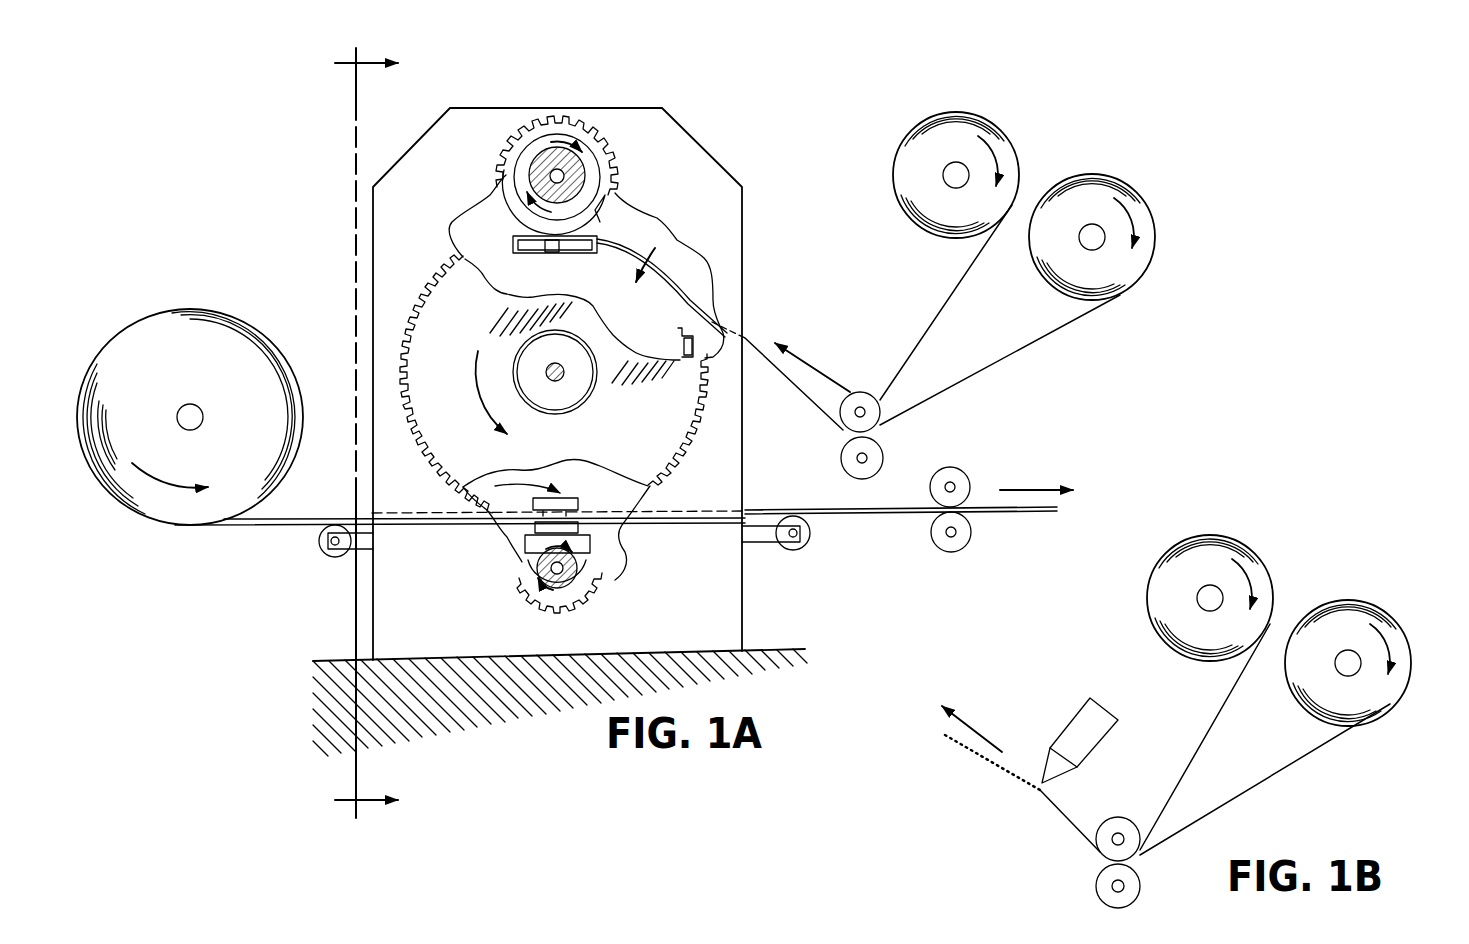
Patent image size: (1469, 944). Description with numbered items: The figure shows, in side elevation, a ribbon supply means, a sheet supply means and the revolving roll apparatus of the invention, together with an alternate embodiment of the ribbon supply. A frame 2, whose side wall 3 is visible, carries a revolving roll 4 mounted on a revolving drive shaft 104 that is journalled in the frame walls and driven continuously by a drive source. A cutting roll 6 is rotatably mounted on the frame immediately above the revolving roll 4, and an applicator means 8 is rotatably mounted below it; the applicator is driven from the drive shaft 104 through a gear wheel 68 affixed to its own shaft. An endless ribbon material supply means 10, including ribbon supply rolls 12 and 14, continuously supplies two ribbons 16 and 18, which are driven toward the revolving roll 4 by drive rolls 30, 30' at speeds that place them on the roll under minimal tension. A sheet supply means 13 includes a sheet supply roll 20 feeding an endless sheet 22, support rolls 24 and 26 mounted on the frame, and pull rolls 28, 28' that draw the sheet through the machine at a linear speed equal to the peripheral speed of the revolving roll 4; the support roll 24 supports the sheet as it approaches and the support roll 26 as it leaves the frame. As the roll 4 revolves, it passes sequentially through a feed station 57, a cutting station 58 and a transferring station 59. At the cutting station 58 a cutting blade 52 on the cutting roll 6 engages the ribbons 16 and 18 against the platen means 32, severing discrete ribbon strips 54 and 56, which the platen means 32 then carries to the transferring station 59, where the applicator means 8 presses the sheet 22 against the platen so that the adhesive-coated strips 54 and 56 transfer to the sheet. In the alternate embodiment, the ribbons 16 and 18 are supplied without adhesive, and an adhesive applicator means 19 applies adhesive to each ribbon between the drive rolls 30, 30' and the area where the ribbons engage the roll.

In FIG. 1A, the frame 2 is at (711, 628).
In FIG. 1A, the side wall 3 is at (748, 580).
In FIG. 1A, the revolving roll 4 is at (662, 263).
In FIG. 1A, the cutting roll 6 is at (505, 208).
In FIG. 1A, the applicator means 8 is at (609, 541).
In FIG. 1A, the ribbon material supply means 10 is at (1070, 133).
In FIG. 1B, the ribbon material supply means 10 is at (1317, 576).
In FIG. 1A, the ribbon supply roll 12 is at (1013, 160).
In FIG. 1B, the ribbon supply roll 12 is at (1268, 582).
In FIG. 1A, the sheet supply means 13 is at (205, 641).
In FIG. 1A, the ribbon supply roll 14 is at (1148, 212).
In FIG. 1B, the ribbon supply roll 14 is at (1396, 625).
In FIG. 1A, the ribbon 16 is at (946, 303).
In FIG. 1B, the ribbon 16 is at (1213, 721).
In FIG. 1A, the ribbon 18 is at (1040, 338).
In FIG. 1B, the ribbon 18 is at (1300, 762).
In FIG. 1B, the adhesive applicator means 19 is at (1073, 722).
In FIG. 1A, the sheet supply roll 20 is at (122, 318).
In FIG. 1A, the sheet 22 is at (275, 530).
In FIG. 1A, the support roll 24 is at (333, 557).
In FIG. 1A, the support roll 26 is at (805, 547).
In FIG. 1A, the pull roll 28 is at (929, 550).
In FIG. 1A, the pull roll 28' is at (974, 461).
In FIG. 1A, the drive roll 30 is at (826, 458).
In FIG. 1B, the drive roll 30 is at (1085, 886).
In FIG. 1A, the drive roll 30' is at (864, 381).
In FIG. 1B, the drive roll 30' is at (1094, 812).
In FIG. 1A, the platen means 32 is at (505, 236).
In FIG. 1A, the cutting blade 52 is at (605, 213).
In FIG. 1A, the ribbon strip 54 is at (608, 534).
In FIG. 1A, the ribbon strip 56 is at (530, 527).
In FIG. 1A, the feed station 57 is at (672, 220).
In FIG. 1A, the cutting station 58 is at (584, 236).
In FIG. 1A, the transferring station 59 is at (522, 556).
In FIG. 1A, the gear wheel 68 is at (560, 613).
In FIG. 1A, the drive shaft 104 is at (566, 378).